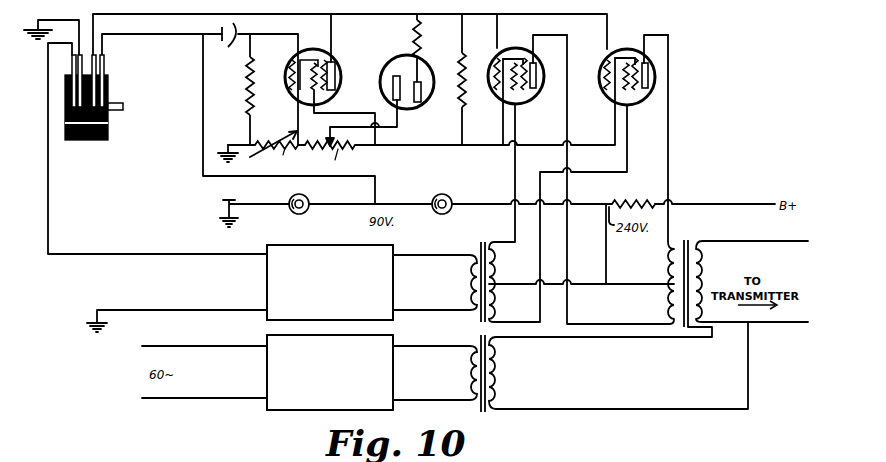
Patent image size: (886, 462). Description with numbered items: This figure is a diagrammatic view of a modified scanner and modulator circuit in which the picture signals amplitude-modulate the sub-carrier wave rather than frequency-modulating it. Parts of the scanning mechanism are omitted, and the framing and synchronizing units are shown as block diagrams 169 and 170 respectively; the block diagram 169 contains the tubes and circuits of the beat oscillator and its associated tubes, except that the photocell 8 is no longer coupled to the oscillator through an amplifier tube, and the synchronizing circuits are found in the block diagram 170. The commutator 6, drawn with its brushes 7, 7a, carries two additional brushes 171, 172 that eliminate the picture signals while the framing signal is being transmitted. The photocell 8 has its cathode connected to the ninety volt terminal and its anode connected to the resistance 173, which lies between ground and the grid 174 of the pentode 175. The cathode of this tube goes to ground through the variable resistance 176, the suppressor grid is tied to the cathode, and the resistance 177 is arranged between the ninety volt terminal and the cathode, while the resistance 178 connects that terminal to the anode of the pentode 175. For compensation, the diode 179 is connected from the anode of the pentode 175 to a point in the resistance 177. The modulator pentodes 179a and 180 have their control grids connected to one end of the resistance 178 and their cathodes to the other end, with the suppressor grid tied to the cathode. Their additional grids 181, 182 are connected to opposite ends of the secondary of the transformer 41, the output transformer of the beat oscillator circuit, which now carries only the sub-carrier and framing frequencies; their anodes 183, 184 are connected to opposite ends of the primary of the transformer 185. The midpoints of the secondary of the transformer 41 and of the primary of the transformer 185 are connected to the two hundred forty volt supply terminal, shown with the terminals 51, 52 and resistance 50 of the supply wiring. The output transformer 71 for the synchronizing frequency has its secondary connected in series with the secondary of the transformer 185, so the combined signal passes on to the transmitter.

The commutator 6 is at (108, 123).
The electrode 7 is at (71, 64).
The electrode 7a is at (79, 50).
The additional brush 171 is at (97, 56).
The additional brush 172 is at (105, 67).
The photocell 8 is at (227, 49).
The resistance 173 is at (246, 90).
The grid 174 is at (292, 57).
The pentode 175 is at (312, 48).
The variable resistance 176 is at (276, 156).
The resistance 177 is at (330, 158).
The resistance 178 is at (459, 100).
The diode 179 is at (399, 58).
The pentode 179a is at (506, 48).
The additional grid 181 is at (514, 90).
The anode 183 is at (537, 70).
The pentode 180 is at (624, 49).
The additional grid 182 is at (625, 90).
The anode 184 is at (649, 76).
The terminal 52 is at (308, 197).
The terminal 51 is at (451, 196).
The resistor 50 is at (635, 200).
The transformer 41 is at (483, 241).
The output transformer 71 is at (480, 337).
The transformer 185 is at (690, 238).
The block diagram 169 is at (289, 244).
The block diagram 170 is at (266, 372).